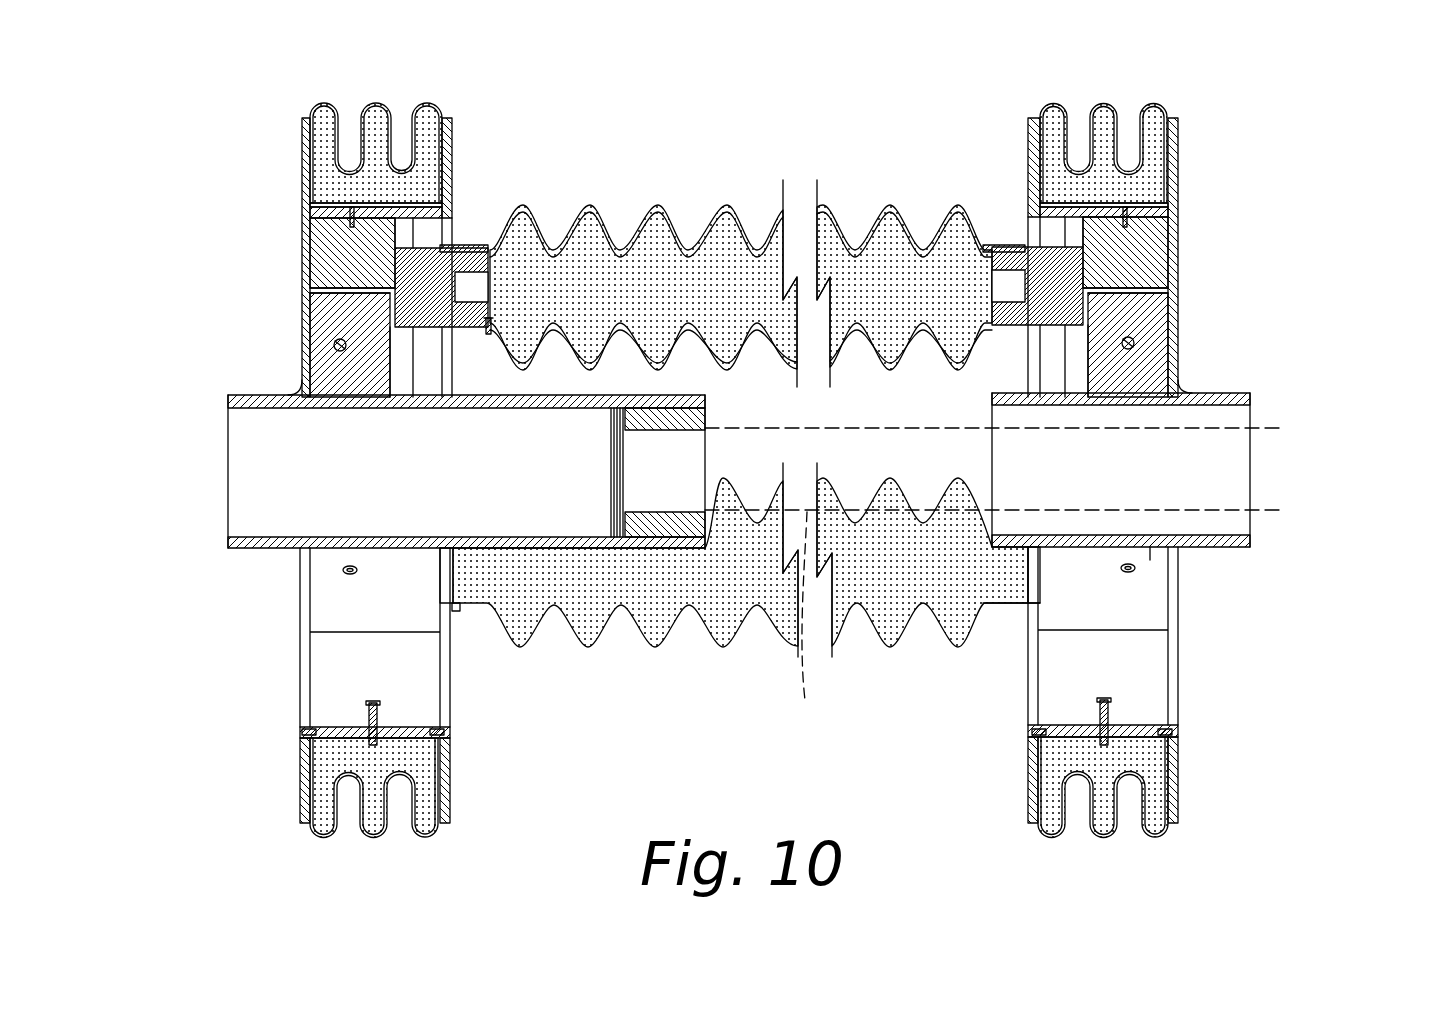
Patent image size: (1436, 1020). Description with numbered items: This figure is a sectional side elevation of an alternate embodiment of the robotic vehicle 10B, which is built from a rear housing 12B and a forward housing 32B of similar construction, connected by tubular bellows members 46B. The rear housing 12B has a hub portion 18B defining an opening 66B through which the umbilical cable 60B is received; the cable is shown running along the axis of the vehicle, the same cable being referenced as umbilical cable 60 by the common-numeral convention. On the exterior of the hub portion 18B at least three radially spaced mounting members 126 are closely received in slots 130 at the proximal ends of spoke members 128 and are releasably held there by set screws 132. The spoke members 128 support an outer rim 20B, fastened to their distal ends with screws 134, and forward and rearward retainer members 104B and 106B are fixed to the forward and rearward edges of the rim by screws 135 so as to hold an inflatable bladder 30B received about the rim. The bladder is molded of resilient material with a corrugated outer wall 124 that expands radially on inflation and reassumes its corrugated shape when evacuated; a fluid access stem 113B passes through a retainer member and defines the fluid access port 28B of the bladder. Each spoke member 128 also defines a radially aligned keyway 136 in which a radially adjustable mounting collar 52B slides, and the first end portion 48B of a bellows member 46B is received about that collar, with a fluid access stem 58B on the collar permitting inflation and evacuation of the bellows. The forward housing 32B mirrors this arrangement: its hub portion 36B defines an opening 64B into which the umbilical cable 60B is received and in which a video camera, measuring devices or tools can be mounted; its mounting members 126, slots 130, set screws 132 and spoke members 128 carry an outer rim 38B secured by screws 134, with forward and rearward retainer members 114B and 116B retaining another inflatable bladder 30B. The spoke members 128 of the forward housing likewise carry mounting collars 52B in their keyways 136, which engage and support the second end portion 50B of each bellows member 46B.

The robotic vehicle 10B is at (1351, 107).
The rear housing 12B is at (1175, 300).
The hub portion 18B is at (1150, 545).
The outer rim 20B is at (1080, 200).
The fluid access port 28B is at (373, 703).
The inflatable bladder 30B is at (378, 103).
The forward housing 32B is at (287, 311).
The hub portion 36B is at (590, 550).
The outer rim 38B is at (340, 728).
The tubular bellows member 46B is at (742, 200).
The first end portion 48B is at (1010, 243).
The second end portion 50B is at (470, 250).
The mounting collar 52B is at (492, 290).
The fluid access stem 58B is at (492, 327).
The umbilical cable 60 is at (1283, 428).
The umbilical cable 60B is at (820, 622).
The opening 64B is at (228, 455).
The opening 66B is at (1000, 457).
The forward retainer member 104B is at (1030, 790).
The rearward retainer member 106B is at (1178, 790).
The fluid access stem 113B is at (395, 705).
The forward retainer member 114B is at (300, 790).
The rearward retainer member 116B is at (450, 790).
The corrugated outer wall 124 is at (373, 838).
The mounting member 126 is at (325, 378).
The spoke member 128 is at (318, 240).
The slot 130 is at (312, 290).
The set screw 132 is at (334, 345).
The screw 134 is at (302, 218).
The screw 135 is at (305, 735).
The keyway 136 is at (408, 360).